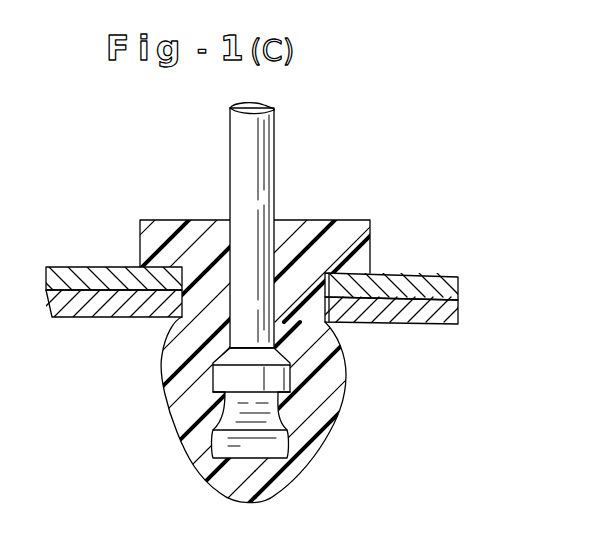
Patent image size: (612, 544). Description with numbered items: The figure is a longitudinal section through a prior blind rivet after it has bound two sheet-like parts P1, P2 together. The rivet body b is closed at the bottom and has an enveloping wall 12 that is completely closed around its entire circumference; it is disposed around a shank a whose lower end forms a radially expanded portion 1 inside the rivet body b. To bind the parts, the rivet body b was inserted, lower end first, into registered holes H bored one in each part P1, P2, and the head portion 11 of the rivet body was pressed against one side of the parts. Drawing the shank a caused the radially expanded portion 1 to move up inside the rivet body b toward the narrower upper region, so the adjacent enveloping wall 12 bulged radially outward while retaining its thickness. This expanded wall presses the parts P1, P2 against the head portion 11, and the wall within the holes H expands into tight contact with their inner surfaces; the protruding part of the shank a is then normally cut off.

The head portion of the rivet body 11 is at (160, 236).
The enveloping wall 12 is at (170, 364).
The rivet body b is at (172, 429).
The sheet-like part P1 is at (460, 286).
The sheet-like part P2 is at (455, 323).
The registered holes H is at (328, 297).
The shank a is at (281, 160).
The radially expanded portion of the shank 1 is at (275, 382).